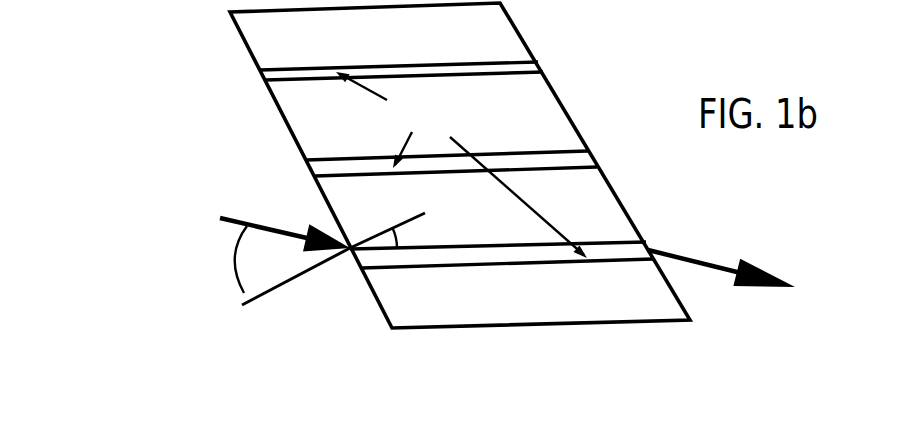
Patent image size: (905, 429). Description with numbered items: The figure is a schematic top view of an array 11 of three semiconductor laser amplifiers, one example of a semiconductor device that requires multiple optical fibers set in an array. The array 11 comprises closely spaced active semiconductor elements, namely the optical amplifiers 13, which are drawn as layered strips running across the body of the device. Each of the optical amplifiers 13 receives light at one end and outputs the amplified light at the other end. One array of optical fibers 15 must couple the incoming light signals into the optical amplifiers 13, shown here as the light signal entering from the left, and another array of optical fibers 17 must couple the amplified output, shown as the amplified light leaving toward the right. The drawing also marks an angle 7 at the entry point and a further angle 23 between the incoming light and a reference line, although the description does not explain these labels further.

The array of optical amplifiers 11 is at (602, 47).
The optical amplifiers 13 is at (538, 65).
The array of optical fibers 15 is at (224, 213).
The array of optical fibers 17 is at (703, 258).
The angle of incidence 7 is at (395, 230).
The angle between incident and refracted beams 23 is at (271, 265).